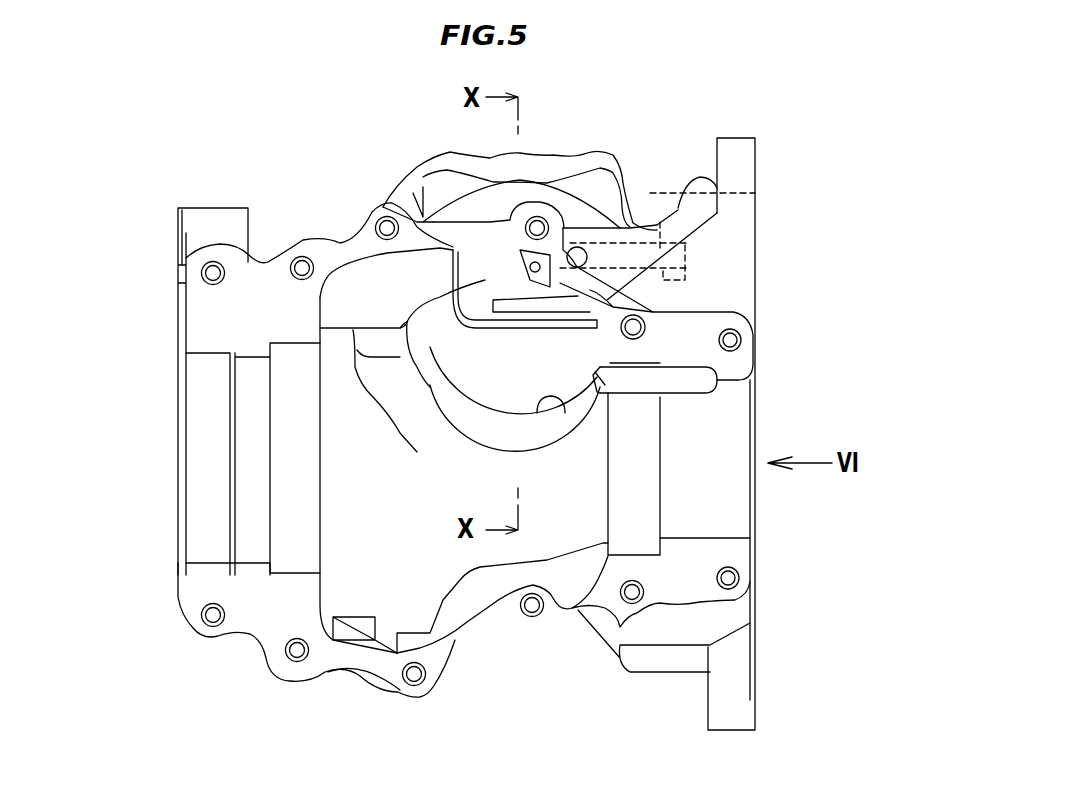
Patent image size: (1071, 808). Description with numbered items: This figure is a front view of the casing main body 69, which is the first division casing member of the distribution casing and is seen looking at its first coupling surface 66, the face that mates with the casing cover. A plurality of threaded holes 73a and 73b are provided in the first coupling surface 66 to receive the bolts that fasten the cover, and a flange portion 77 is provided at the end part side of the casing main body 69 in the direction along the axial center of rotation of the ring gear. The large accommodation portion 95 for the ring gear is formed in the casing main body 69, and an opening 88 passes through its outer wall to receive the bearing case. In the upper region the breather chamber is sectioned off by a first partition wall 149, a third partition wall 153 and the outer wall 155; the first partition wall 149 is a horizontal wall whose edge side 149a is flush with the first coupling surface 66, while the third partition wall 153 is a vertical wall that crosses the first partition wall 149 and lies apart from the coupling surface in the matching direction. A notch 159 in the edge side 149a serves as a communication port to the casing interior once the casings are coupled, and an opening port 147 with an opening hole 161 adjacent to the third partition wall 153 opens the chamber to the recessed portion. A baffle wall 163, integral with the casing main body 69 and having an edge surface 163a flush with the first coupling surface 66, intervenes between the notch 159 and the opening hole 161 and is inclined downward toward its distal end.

The first coupling surface 66 is at (250, 612).
The casing main body 69 is at (629, 152).
The threaded hole 73a is at (742, 338).
The threaded hole 73b is at (655, 312).
The flange portion 77 is at (747, 137).
The opening 88 is at (537, 415).
The accommodation portion 95 is at (347, 293).
The opening port 147 is at (665, 222).
The first partition wall 149 is at (500, 300).
The edge side 149a is at (507, 330).
The third partition wall 153 is at (500, 298).
The outer wall 155 is at (627, 240).
The notch 159 is at (607, 380).
The opening hole 161 is at (523, 300).
The baffle wall 163 is at (470, 247).
The edge surface 163a is at (495, 280).